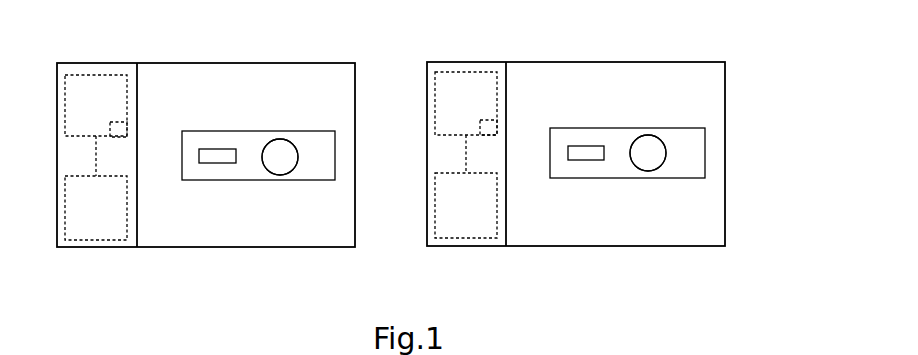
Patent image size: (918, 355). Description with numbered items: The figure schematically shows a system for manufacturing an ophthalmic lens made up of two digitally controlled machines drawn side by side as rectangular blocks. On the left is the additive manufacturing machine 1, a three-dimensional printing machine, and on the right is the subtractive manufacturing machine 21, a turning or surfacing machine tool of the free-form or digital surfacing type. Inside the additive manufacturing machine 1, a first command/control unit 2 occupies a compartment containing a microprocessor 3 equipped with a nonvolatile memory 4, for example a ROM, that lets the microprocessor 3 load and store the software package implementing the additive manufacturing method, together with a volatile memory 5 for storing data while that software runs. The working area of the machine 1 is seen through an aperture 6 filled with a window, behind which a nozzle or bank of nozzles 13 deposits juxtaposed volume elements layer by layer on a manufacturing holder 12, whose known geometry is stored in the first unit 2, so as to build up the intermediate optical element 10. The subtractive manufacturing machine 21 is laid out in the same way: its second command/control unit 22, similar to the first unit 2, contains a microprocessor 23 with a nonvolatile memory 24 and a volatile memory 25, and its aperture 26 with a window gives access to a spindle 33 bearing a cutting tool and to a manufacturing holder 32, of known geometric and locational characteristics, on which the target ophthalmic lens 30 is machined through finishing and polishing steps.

The additive manufacturing machine 1 is at (355, 197).
The first command/control unit 2 is at (108, 248).
The microprocessor 3 is at (90, 75).
The memory 4 is at (128, 125).
The memory 5 is at (85, 240).
The aperture 6 is at (325, 157).
The intermediate optical element 10 is at (281, 170).
The manufacturing holder 12 is at (278, 140).
The nozzle or bank of nozzles 13 is at (215, 149).
The subtractive manufacturing machine 21 is at (725, 195).
The second command/control unit 22 is at (488, 247).
The microprocessor 23 is at (460, 72).
The memory 24 is at (498, 122).
The memory 25 is at (465, 238).
The aperture 26 is at (697, 153).
The target ophthalmic lens 30 is at (650, 166).
The manufacturing holder 32 is at (645, 136).
The spindle 33 is at (585, 146).